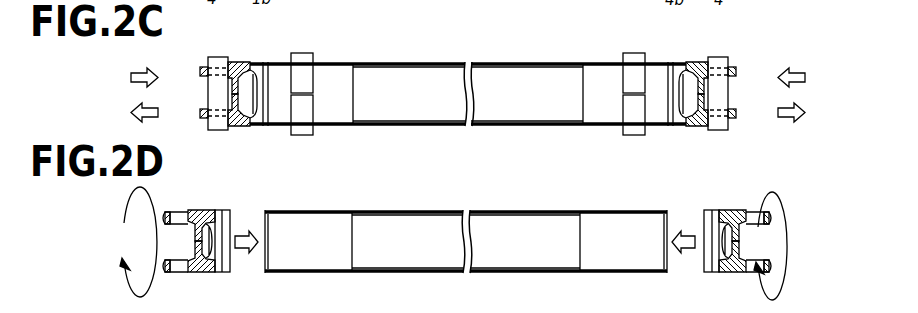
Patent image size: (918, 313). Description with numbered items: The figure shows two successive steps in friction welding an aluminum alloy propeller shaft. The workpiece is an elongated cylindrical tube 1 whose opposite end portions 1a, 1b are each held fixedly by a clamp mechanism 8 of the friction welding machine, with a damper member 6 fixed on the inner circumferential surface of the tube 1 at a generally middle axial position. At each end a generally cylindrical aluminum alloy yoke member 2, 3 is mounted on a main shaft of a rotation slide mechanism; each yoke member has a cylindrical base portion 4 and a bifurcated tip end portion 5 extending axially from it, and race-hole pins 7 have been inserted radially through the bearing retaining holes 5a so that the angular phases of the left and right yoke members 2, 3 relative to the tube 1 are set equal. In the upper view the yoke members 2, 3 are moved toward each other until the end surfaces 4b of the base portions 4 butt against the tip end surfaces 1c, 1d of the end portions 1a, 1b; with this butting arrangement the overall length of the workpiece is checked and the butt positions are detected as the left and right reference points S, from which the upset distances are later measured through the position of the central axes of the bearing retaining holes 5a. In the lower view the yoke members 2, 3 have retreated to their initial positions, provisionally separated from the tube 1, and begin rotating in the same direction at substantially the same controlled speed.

In FIG. 2C, the tube 1 is at (493, 62).
In FIG. 2D, the tube 1 is at (492, 210).
In FIG. 2C, the end portion 1a is at (333, 73).
In FIG. 2D, the end portion 1a is at (333, 220).
In FIG. 2C, the end portion 1b is at (597, 73).
In FIG. 2D, the end portion 1b is at (597, 225).
In FIG. 2D, the tip end surface 1c is at (264, 212).
In FIG. 2D, the tip end surface 1d is at (668, 210).
In FIG. 2C, the yoke member 2 is at (238, 62).
In FIG. 2D, the yoke member 2 is at (205, 210).
In FIG. 2C, the yoke member 3 is at (692, 62).
In FIG. 2D, the yoke member 3 is at (718, 212).
In FIG. 2C, the base portion 4 is at (235, 126).
In FIG. 2D, the base portion 4 is at (201, 269).
In FIG. 2D, the end surface 4b is at (229, 272).
In FIG. 2C, the bifurcated tip end portion 5 is at (201, 115).
In FIG. 2D, the bifurcated tip end portion 5 is at (178, 267).
In FIG. 2C, the bearing retaining hole 5a is at (202, 70).
In FIG. 2D, the bearing retaining hole 5a is at (180, 215).
In FIG. 2C, the damper member 6 is at (377, 67).
In FIG. 2D, the damper member 6 is at (380, 216).
In FIG. 2C, the race-hole pin 7 is at (218, 57).
In FIG. 2C, the clamp mechanism 8 is at (304, 57).
In FIG. 2C, the reference point S is at (261, 127).